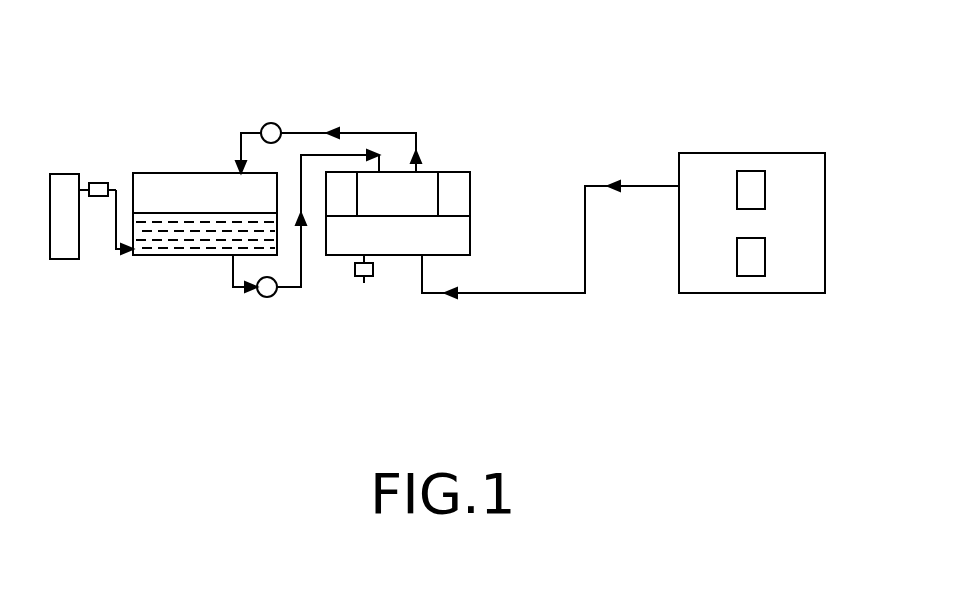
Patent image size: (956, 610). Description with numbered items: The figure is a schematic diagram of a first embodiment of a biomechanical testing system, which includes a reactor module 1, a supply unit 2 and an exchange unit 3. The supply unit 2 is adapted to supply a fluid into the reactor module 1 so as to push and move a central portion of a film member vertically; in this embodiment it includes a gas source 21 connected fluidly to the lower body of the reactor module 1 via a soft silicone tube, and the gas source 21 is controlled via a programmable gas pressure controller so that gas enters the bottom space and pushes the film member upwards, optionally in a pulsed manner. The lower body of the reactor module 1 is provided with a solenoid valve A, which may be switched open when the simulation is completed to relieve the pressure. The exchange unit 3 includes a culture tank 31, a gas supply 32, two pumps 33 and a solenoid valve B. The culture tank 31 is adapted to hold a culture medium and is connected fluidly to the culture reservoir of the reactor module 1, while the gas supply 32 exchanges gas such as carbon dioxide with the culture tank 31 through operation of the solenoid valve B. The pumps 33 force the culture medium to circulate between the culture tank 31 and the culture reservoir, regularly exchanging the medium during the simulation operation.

The reactor module 1 is at (451, 142).
The supply unit 2 is at (742, 303).
The gas source 21 is at (750, 153).
The exchange unit 3 is at (186, 272).
The culture tank 31 is at (184, 173).
The gas supply 32 is at (65, 260).
The pumps 33 is at (271, 123).
The solenoid valve A is at (373, 269).
The solenoid valve B is at (98, 183).